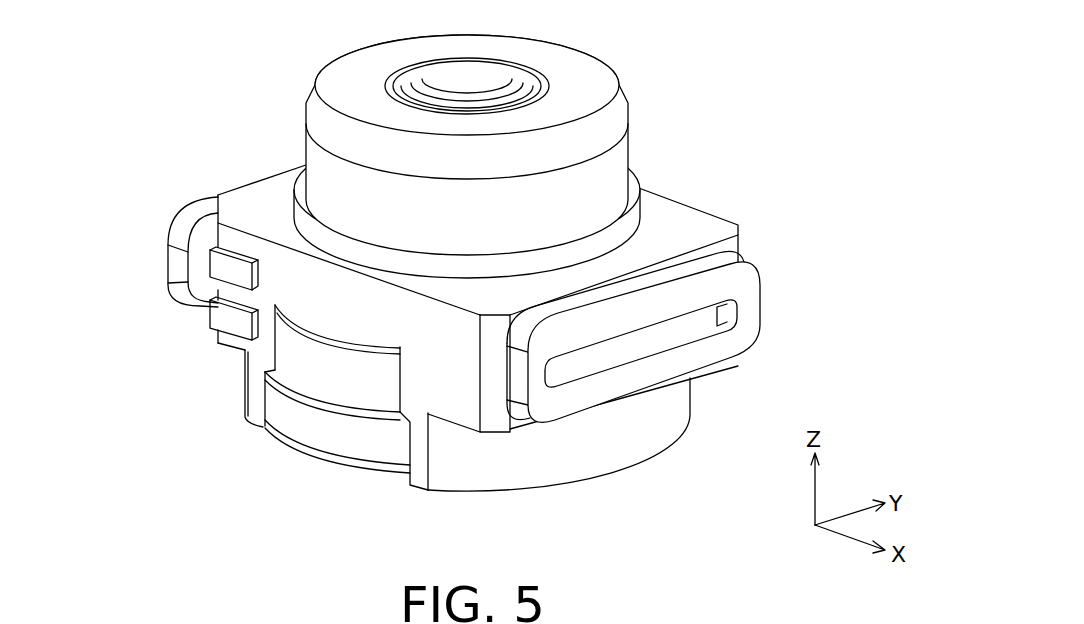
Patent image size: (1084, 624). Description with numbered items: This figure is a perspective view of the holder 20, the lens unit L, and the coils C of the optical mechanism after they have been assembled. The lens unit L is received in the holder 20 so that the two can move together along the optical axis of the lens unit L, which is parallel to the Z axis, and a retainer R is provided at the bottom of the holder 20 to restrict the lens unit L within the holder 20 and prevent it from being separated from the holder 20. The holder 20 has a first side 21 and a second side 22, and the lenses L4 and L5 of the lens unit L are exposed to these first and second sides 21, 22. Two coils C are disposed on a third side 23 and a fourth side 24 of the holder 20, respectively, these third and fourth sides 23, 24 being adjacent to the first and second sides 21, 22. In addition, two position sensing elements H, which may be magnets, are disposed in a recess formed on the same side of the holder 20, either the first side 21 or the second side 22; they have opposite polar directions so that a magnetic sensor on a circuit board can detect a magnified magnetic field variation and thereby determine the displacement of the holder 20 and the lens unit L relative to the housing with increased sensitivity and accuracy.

The holder 20 is at (447, 323).
The first side 21 is at (433, 377).
The second side 22 is at (730, 216).
The third side 23 is at (638, 277).
The fourth side 24 is at (258, 178).
The coil C is at (208, 203).
The position sensing element H is at (218, 265).
The lens unit L is at (484, 106).
The lens L4 is at (297, 360).
The lens L5 is at (285, 406).
The retainer R is at (312, 450).